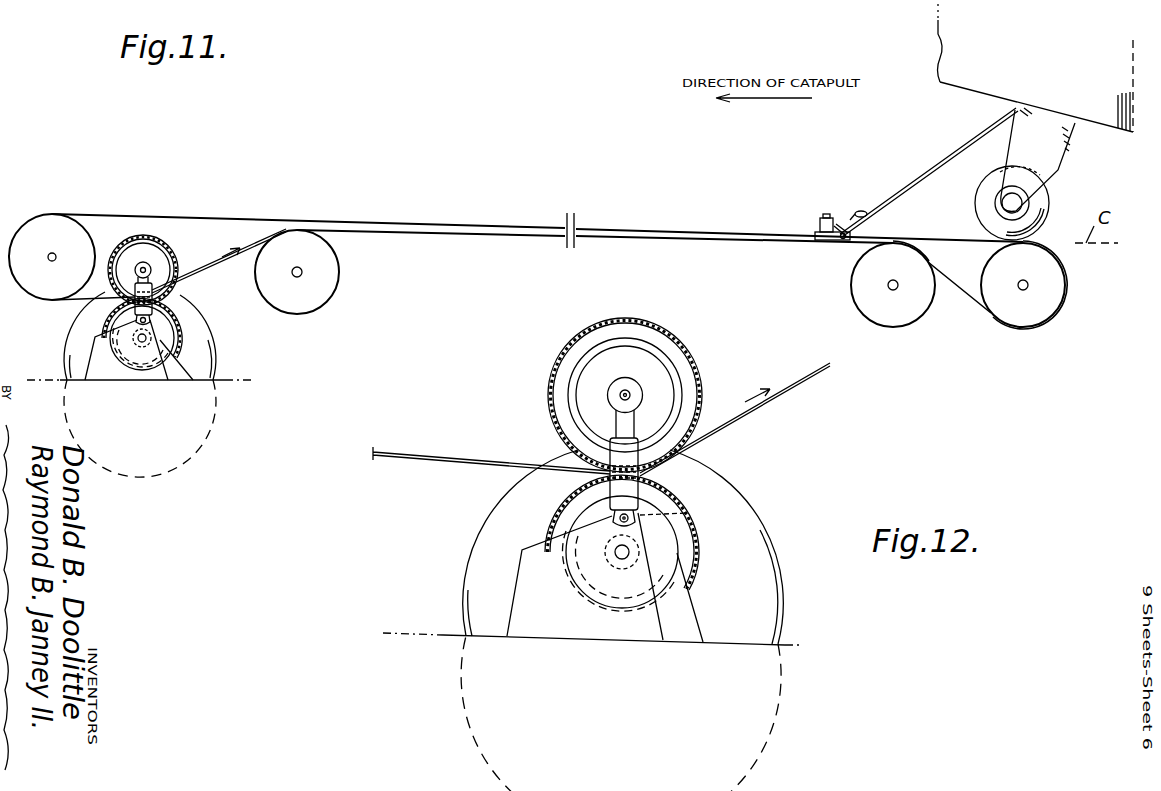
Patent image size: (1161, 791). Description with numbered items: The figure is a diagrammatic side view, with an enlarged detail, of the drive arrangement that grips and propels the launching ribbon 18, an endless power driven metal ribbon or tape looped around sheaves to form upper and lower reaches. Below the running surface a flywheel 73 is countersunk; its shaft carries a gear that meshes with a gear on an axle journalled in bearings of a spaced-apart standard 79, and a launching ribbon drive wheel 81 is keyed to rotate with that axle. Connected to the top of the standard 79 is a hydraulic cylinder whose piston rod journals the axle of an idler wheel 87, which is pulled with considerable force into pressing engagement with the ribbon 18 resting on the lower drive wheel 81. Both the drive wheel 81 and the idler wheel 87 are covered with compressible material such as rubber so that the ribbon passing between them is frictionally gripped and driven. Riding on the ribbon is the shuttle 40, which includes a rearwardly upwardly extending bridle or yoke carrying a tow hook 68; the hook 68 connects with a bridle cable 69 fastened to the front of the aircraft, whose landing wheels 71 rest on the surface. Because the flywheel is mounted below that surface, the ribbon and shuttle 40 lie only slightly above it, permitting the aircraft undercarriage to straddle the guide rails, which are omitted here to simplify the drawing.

In FIG. 11, the launching ribbon 18 is at (279, 218).
In FIG. 12, the launching ribbon 18 is at (832, 366).
In FIG. 11, the idler wheel 87 is at (162, 262).
In FIG. 12, the idler wheel 87 is at (673, 377).
In FIG. 11, the launching ribbon drive wheel 81 is at (163, 333).
In FIG. 11, the standard 79 is at (95, 352).
In FIG. 12, the standard 79 is at (523, 565).
In FIG. 11, the flywheel 73 is at (208, 358).
In FIG. 12, the flywheel 73 is at (473, 596).
In FIG. 11, the shuttle 40 is at (824, 205).
In FIG. 11, the tow hook 68 is at (858, 211).
In FIG. 11, the bridle cable 69 is at (928, 170).
In FIG. 11, the landing wheels 71 is at (1047, 200).